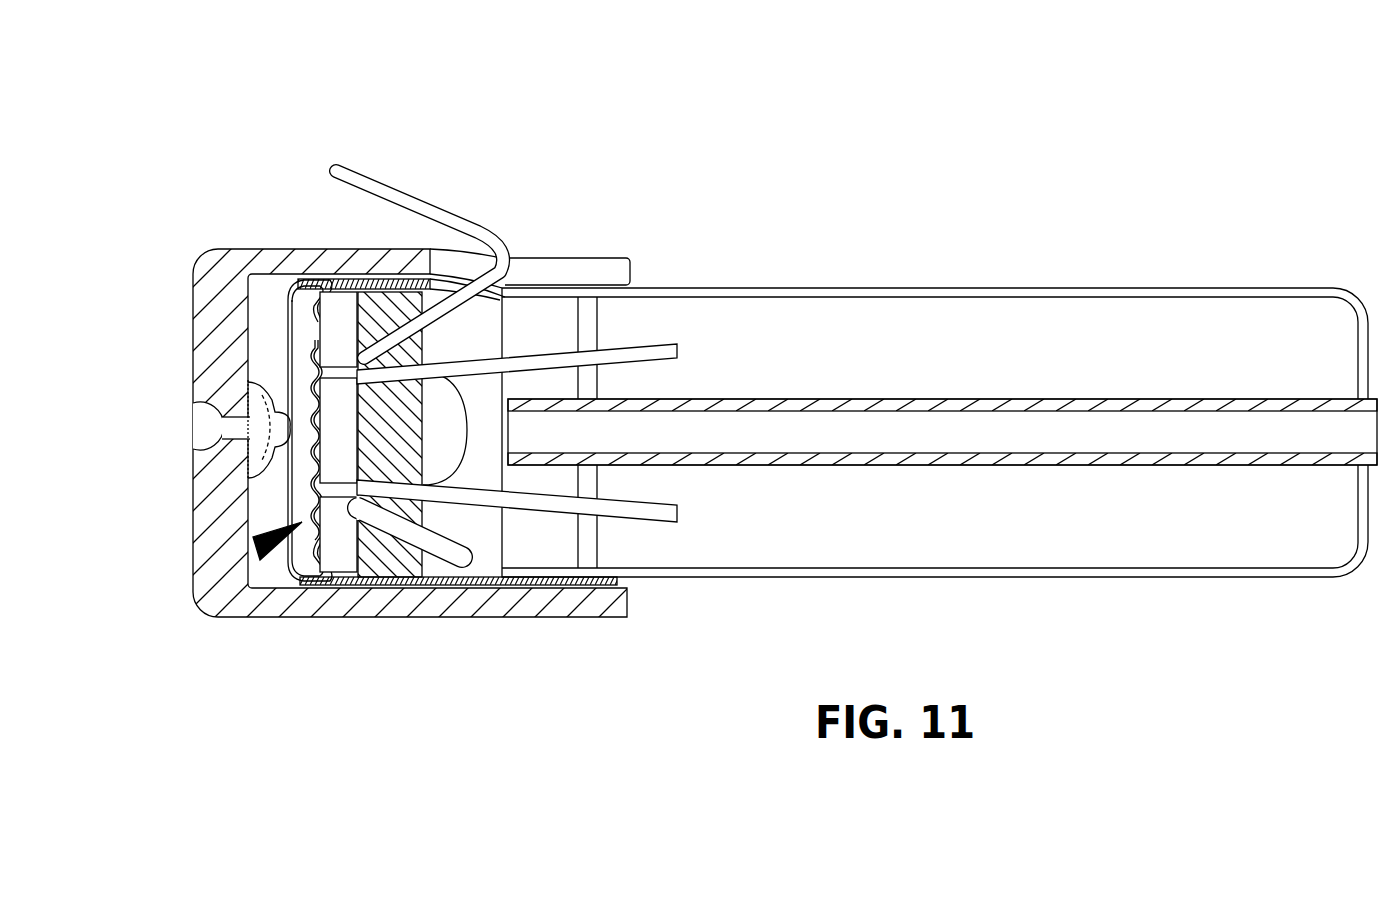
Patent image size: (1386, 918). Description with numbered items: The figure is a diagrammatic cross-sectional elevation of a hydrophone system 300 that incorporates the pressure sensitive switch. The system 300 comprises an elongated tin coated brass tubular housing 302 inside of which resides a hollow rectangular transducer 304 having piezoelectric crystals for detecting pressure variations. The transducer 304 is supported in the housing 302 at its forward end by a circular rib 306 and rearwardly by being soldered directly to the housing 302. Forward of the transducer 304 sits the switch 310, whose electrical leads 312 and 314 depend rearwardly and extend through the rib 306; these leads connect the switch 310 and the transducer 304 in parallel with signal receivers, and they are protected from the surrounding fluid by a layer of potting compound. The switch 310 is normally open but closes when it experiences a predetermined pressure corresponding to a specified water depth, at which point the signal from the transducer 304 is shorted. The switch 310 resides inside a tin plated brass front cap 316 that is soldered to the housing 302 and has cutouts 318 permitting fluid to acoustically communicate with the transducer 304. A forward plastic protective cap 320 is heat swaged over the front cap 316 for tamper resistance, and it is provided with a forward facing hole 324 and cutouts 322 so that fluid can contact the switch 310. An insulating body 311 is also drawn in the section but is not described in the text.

The hydrophone system 300 is at (859, 148).
The tubular housing 302 is at (942, 288).
The transducer 304 is at (883, 400).
The circular rib 306 is at (594, 532).
The switch 310 is at (193, 583).
The insulator block 311 is at (390, 555).
The electrical lead 312 is at (662, 348).
The electrical lead 314 is at (663, 513).
The front cap 316 is at (492, 582).
The cutouts 318 is at (458, 428).
The protective cap 320 is at (305, 262).
The cutouts 322 is at (580, 270).
The forward facing hole 324 is at (217, 422).